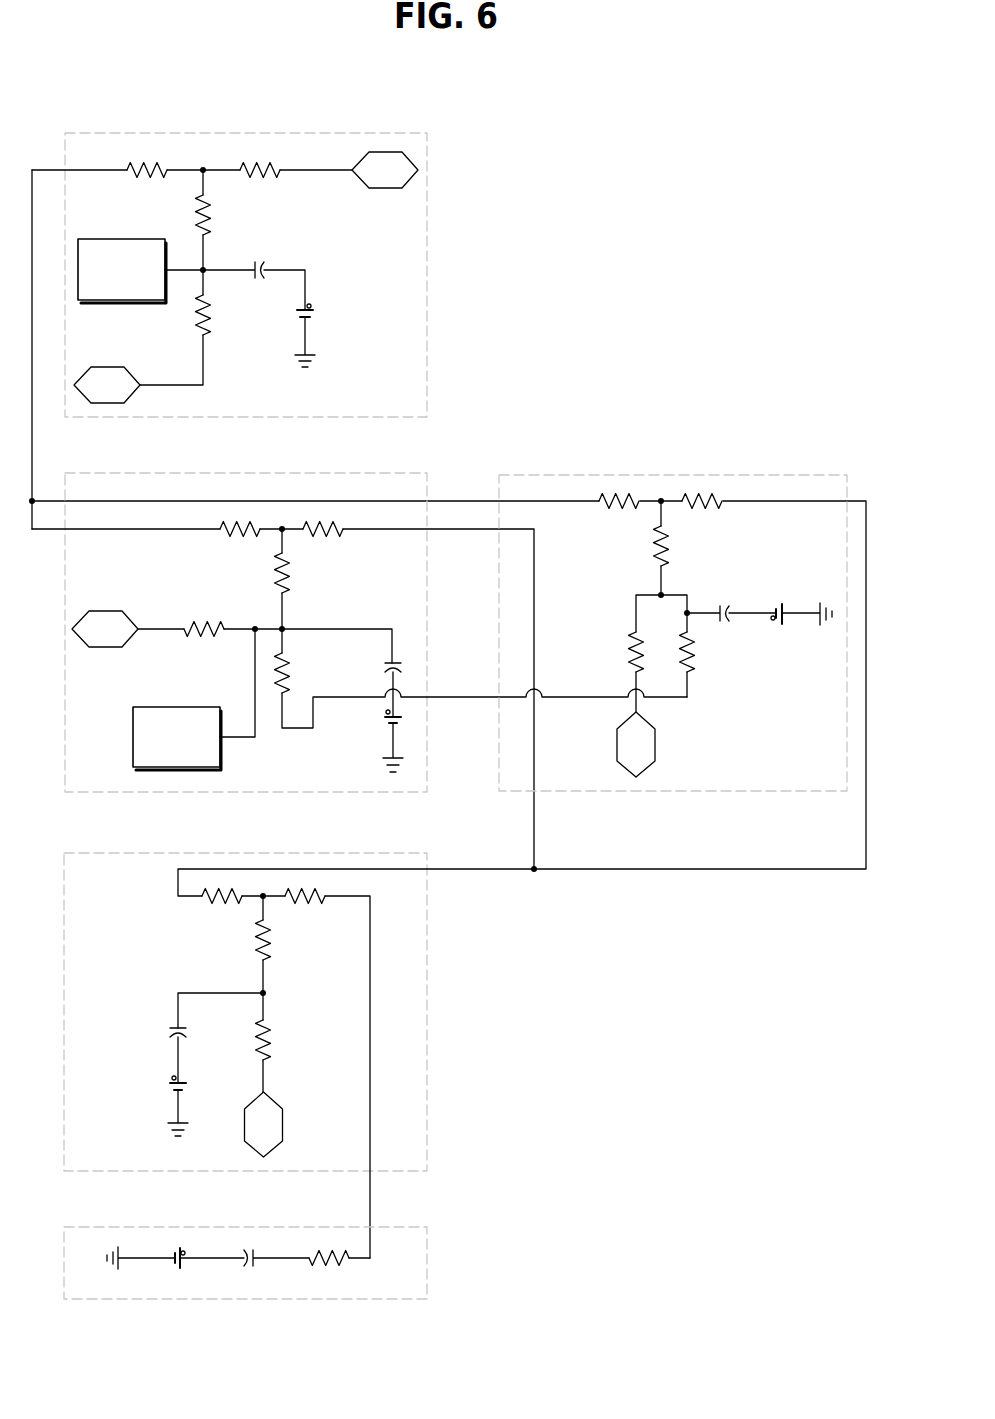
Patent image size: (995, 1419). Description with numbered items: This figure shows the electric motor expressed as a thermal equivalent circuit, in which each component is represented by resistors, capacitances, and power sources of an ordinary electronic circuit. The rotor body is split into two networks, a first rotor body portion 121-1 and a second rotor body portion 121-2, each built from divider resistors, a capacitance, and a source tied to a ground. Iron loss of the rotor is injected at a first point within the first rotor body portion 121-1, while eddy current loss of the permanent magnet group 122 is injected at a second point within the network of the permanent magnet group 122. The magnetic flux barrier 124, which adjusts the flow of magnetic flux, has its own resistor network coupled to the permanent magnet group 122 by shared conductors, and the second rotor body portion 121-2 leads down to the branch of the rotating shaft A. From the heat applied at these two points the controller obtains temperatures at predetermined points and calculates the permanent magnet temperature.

The rotor body 121-1 is at (243, 132).
The permanent magnet group 122 is at (243, 473).
The magnetic flux barrier 124 is at (671, 474).
The rotor body 121-2 is at (243, 853).
The rotating shaft A is at (243, 1226).